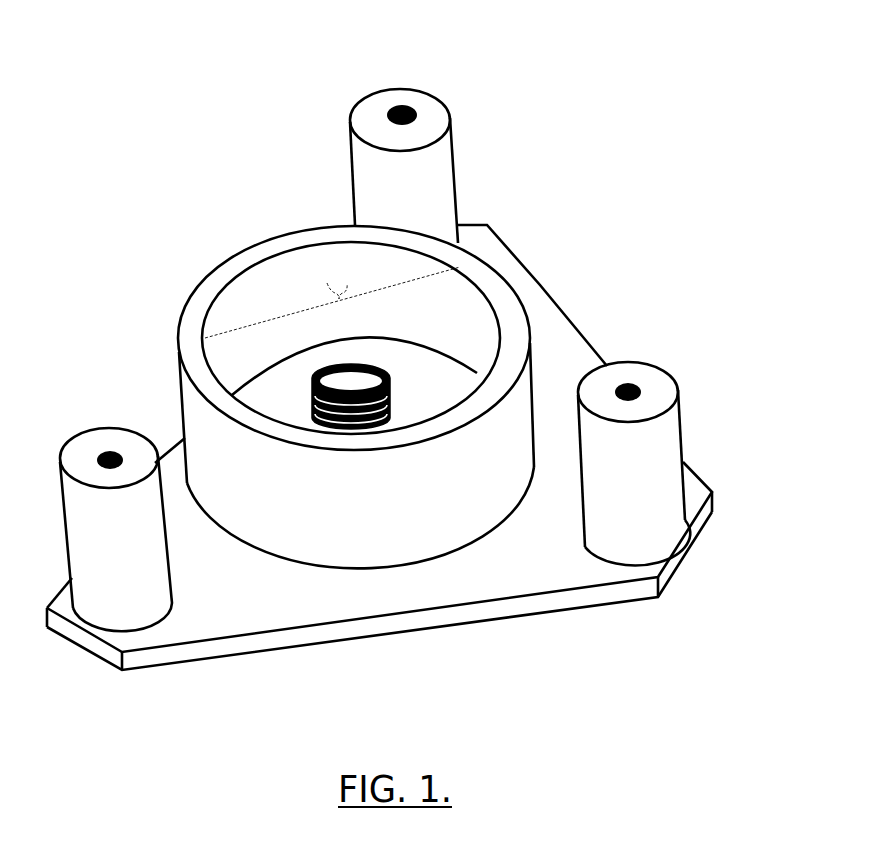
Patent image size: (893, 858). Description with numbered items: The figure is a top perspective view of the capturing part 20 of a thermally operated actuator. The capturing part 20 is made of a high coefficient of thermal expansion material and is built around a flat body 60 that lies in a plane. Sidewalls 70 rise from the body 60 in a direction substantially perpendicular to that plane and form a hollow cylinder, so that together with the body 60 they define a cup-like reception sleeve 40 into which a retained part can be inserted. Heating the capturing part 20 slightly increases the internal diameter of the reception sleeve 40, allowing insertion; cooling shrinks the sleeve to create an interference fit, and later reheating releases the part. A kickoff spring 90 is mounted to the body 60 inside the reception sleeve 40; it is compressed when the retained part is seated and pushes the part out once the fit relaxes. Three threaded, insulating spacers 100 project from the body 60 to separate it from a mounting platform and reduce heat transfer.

The capturing part 20 is at (379, 355).
The reception sleeve 40 is at (301, 317).
The body 60 is at (379, 454).
The sidewalls 70 is at (374, 393).
The kickoff spring 90 is at (401, 407).
The spacers 100 is at (375, 349).